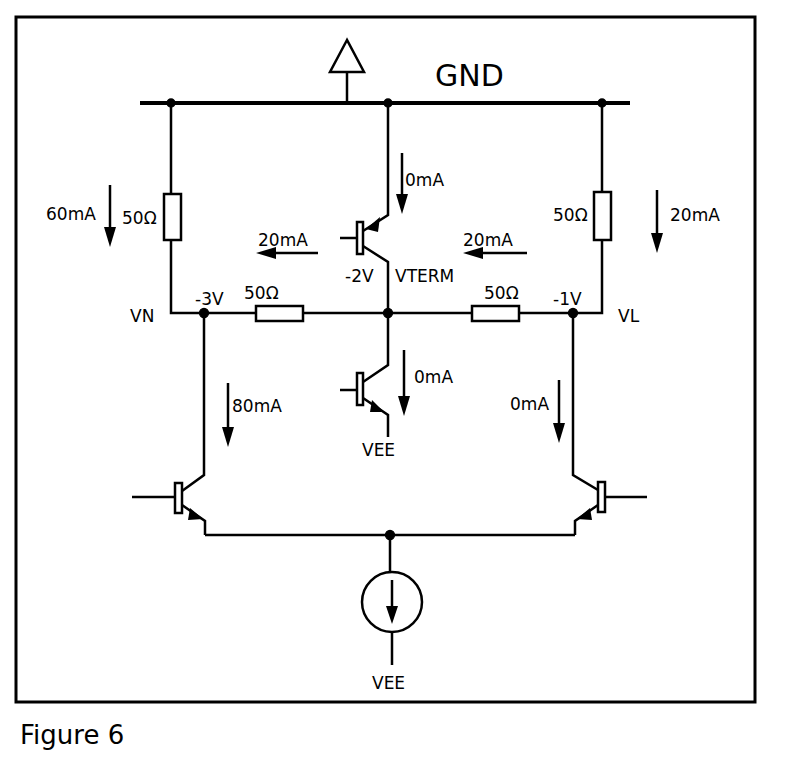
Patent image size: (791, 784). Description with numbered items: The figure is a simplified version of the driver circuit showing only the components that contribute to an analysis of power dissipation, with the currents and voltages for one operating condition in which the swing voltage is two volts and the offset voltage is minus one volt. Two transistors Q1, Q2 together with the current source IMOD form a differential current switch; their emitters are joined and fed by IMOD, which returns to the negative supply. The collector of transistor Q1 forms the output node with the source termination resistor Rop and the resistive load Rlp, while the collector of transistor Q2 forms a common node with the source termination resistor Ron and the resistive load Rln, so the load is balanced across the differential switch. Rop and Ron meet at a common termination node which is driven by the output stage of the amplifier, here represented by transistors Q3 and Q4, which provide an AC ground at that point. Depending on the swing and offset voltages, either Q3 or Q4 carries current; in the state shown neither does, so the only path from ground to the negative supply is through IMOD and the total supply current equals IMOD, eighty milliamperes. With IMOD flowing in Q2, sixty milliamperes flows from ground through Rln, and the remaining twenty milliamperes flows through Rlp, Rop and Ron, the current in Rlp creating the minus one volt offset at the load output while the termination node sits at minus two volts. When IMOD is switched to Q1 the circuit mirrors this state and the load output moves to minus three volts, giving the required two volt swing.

The transistor Q1 is at (610, 424).
The transistor Q2 is at (168, 424).
The transistor Q3 is at (354, 208).
The transistor Q4 is at (359, 375).
The resistive load Rln is at (189, 217).
The resistive load Rlp is at (619, 216).
The source termination resistor Ron is at (279, 326).
The source termination resistor Rop is at (495, 326).
The current source IMOD is at (359, 600).